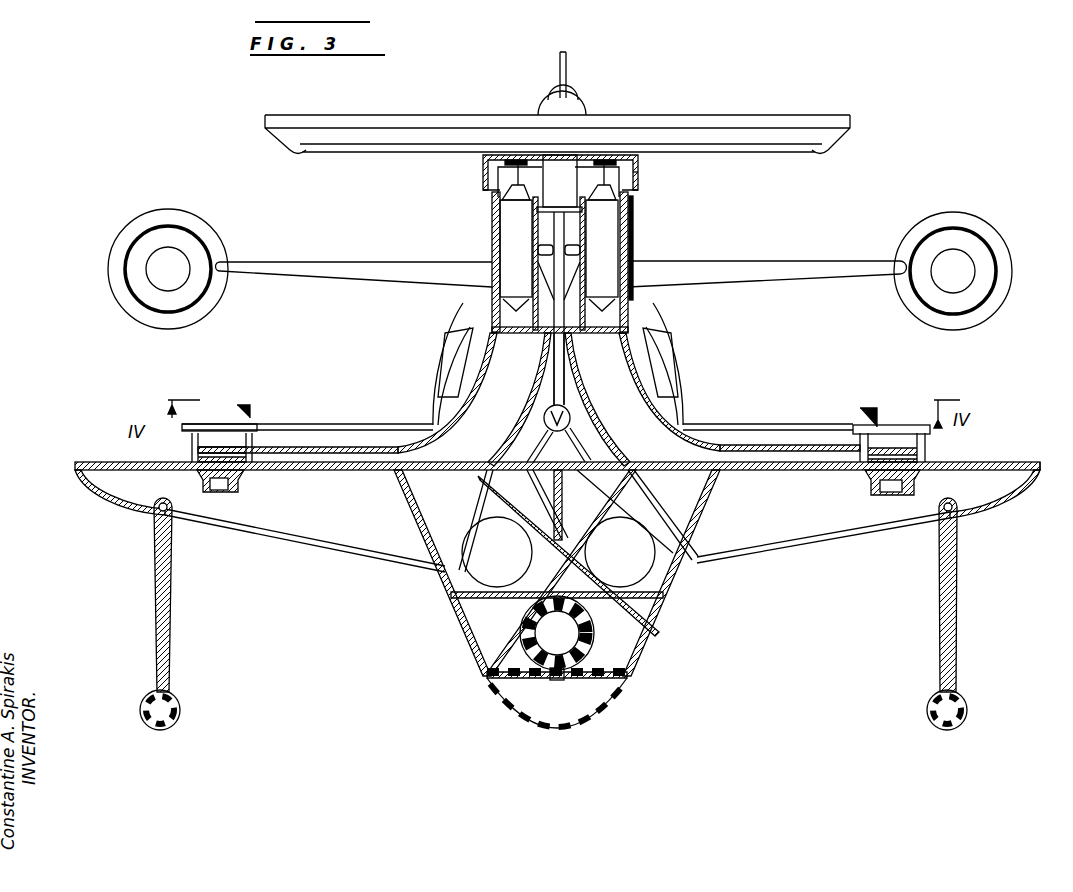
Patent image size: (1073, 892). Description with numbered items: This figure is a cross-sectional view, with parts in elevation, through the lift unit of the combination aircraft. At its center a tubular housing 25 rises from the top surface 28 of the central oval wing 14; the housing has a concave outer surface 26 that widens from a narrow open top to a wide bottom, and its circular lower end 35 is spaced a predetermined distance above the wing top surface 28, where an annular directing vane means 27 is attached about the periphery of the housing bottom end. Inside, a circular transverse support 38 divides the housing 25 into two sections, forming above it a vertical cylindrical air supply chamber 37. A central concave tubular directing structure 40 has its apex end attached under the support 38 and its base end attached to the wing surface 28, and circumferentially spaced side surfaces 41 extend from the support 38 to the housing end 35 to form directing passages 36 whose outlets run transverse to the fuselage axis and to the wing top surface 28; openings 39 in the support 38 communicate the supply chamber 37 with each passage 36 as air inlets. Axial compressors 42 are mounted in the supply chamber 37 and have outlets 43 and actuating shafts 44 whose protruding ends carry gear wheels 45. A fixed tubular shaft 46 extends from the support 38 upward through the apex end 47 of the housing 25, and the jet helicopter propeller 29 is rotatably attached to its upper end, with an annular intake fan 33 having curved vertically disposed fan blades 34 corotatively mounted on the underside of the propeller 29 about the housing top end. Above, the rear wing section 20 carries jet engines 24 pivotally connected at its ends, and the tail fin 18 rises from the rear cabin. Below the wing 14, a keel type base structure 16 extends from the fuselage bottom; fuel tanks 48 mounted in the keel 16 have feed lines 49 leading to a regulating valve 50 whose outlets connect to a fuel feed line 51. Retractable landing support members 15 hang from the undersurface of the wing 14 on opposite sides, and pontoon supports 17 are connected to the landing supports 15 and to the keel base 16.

The central oval lifting surface or wing 14 is at (78, 497).
The retractable landing support members 15 is at (180, 637).
The keel type base structure 16 is at (667, 620).
The pontoon supports 17 is at (178, 725).
The tail fin 18 is at (568, 72).
The rear wing section 20 is at (690, 266).
The jet engines 24 is at (120, 292).
The tubular housing 25 is at (652, 323).
The concave outer surface 26 is at (657, 343).
The annular directing vane means 27 is at (936, 470).
The top surface of the wing 28 is at (108, 464).
The jet helicopter propeller 29 is at (702, 124).
The annular intake fan 33 is at (644, 161).
The fan blades 34 is at (484, 160).
The circular lower end 35 is at (855, 433).
The directing passages 36 is at (292, 443).
The air supply chamber 37 is at (632, 322).
The circular transverse support 38 is at (486, 335).
The openings 39 is at (516, 338).
The central concave tubular directing structure 40 is at (590, 386).
The side surfaces 41 is at (657, 370).
The axial compressors 42 is at (516, 212).
The outlets 43 is at (540, 251).
The actuating shafts 44 is at (517, 178).
The gear wheels 45 is at (520, 160).
The fixed tubular shaft 46 is at (556, 222).
The apex end 47 is at (642, 176).
The fuel tanks 48 is at (482, 567).
The feed lines 49 is at (538, 448).
The regulating valve 50 is at (570, 420).
The fuel feed line 51 is at (553, 382).